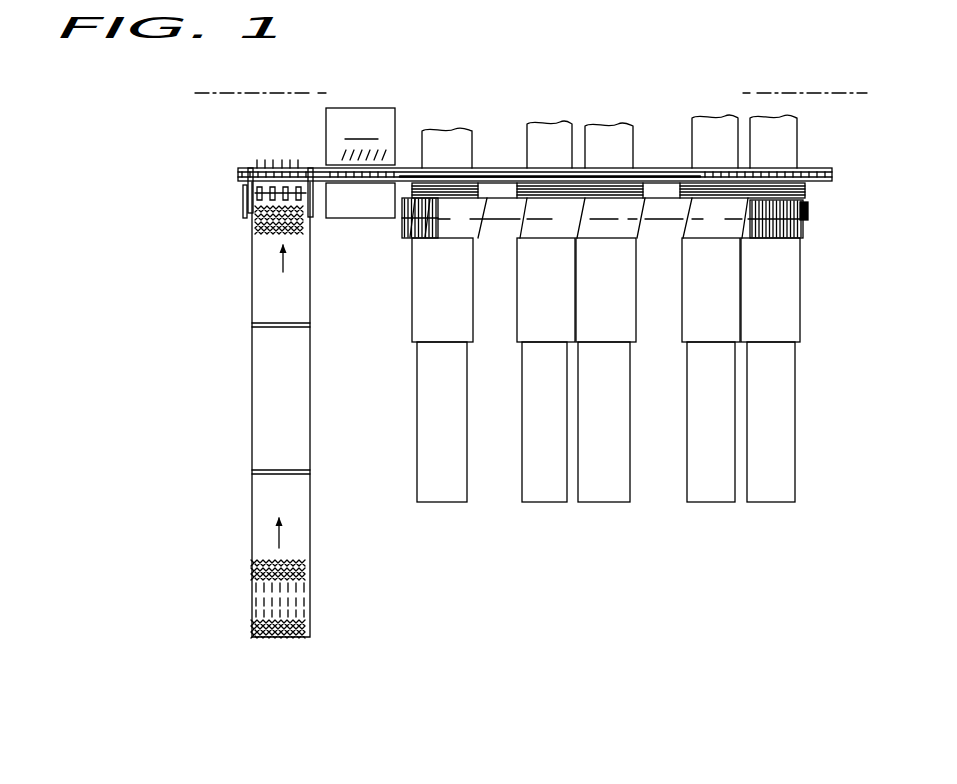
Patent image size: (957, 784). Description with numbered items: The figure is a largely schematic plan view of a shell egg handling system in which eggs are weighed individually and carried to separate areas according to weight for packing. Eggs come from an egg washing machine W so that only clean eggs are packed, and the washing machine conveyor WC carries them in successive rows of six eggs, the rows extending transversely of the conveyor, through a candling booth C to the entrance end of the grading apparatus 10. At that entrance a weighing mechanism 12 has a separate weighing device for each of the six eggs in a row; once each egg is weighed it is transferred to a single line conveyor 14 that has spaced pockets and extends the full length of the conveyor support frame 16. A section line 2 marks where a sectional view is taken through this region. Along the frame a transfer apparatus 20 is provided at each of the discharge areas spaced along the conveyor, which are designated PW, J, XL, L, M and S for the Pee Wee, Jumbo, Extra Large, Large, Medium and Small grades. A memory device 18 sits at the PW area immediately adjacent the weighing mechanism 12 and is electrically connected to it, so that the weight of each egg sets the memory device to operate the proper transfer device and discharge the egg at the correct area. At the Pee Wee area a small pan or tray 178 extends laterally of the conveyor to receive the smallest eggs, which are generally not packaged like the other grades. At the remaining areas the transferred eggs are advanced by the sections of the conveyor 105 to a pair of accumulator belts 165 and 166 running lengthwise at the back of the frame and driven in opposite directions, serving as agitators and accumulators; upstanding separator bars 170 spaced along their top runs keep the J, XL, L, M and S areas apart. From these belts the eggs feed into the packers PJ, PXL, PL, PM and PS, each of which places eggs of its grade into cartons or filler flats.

The section line 2- 2 is at (230, 140).
The grading apparatus 10 is at (236, 192).
The weighing mechanism 12 is at (258, 197).
The single line conveyor 14 is at (812, 177).
The conveyor support frame 16 is at (248, 166).
The memory device 18 is at (353, 218).
The transfer apparatus 20 is at (523, 165).
The conveyor 105 is at (805, 193).
The accumulator belt 165 is at (806, 212).
The accumulator belt 166 is at (803, 240).
The separator bars 170 is at (518, 228).
The pan or tray 178 is at (383, 132).
The Pee Wee transfer area PW is at (388, 124).
The washing machine conveyor WC is at (258, 228).
The candling booth C is at (310, 306).
The egg washing machine W is at (310, 490).
The Jumbo transfer area J is at (433, 178).
The Extra Large transfer area XL is at (537, 178).
The Large transfer area L is at (607, 178).
The Medium transfer area M is at (708, 176).
The Small transfer area S is at (762, 176).
The Jumbo packer PJ is at (467, 384).
The Extra Large packer PXL is at (522, 393).
The Large packer PL is at (630, 410).
The Medium packer PM is at (687, 422).
The Small packer PS is at (795, 413).